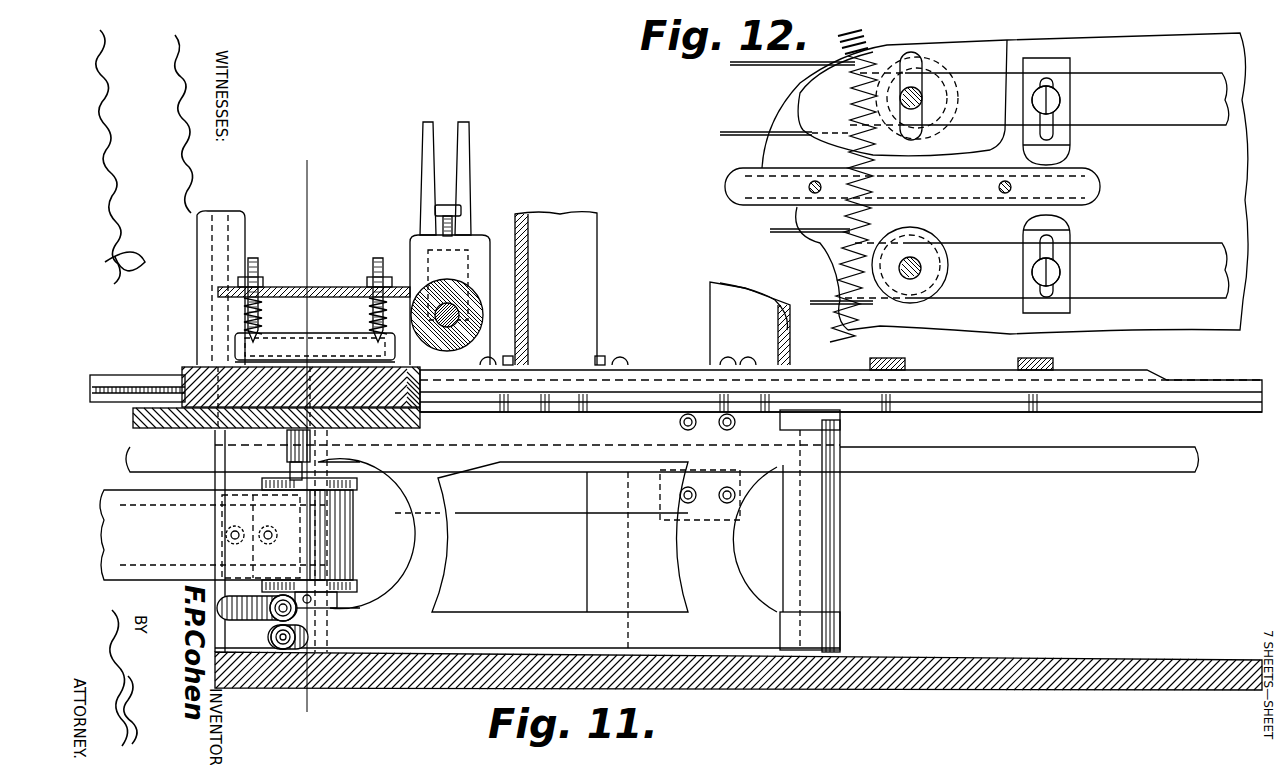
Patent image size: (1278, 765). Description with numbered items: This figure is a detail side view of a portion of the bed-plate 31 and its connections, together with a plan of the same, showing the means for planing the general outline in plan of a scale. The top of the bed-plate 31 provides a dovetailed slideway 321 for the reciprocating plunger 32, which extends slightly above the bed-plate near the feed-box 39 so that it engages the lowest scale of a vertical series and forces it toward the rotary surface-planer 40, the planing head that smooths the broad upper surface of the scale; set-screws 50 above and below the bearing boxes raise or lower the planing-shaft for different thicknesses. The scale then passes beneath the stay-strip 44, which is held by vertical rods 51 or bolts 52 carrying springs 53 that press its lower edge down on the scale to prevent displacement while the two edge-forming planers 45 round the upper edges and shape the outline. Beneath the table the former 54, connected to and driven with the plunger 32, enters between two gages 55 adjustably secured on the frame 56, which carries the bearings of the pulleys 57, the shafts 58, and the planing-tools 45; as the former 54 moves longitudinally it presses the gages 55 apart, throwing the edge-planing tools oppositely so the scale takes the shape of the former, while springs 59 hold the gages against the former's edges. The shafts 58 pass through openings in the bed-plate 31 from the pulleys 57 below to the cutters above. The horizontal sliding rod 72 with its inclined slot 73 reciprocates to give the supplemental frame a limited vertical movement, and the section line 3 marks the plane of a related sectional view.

In FIG. 11, the section line 3 is at (311, 420).
In FIG. 11, the bed-plate 31 is at (1138, 411).
In FIG. 11, the reciprocating plunger 32 is at (190, 367).
In FIG. 11, the slideway 321 is at (160, 377).
In FIG. 11, the feed-box 39 is at (720, 320).
In FIG. 11, the rotary surface-planer 40 is at (466, 298).
In FIG. 11, the stay-strip 44 is at (315, 346).
In FIG. 11, the edge-forming planers 45 is at (326, 360).
In FIG. 11, the set-screws 50 is at (462, 210).
In FIG. 11, the vertical rods 51 is at (332, 287).
In FIG. 11, the bolts 52 is at (258, 265).
In FIG. 11, the springs 53 is at (266, 311).
In FIG. 11, the former 54 is at (133, 420).
In FIG. 12, the former 54 is at (912, 186).
In FIG. 12, the gages 55 is at (1072, 138).
In FIG. 11, the frame 56 is at (527, 531).
In FIG. 12, the frame 56 is at (1037, 185).
In FIG. 11, the pulleys 57 is at (357, 487).
In FIG. 12, the pulleys 57 is at (934, 300).
In FIG. 11, the shafts 58 is at (330, 468).
In FIG. 12, the shafts 58 is at (922, 269).
In FIG. 11, the springs 59 is at (266, 640).
In FIG. 12, the springs 59 is at (863, 40).
In FIG. 11, the horizontal sliding rod 72 is at (662, 480).
In FIG. 11, the inclined slot 73 is at (212, 524).